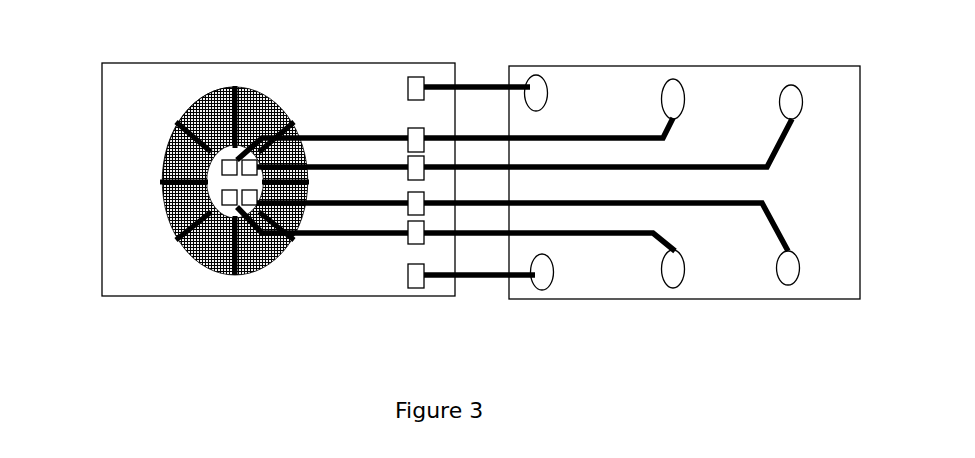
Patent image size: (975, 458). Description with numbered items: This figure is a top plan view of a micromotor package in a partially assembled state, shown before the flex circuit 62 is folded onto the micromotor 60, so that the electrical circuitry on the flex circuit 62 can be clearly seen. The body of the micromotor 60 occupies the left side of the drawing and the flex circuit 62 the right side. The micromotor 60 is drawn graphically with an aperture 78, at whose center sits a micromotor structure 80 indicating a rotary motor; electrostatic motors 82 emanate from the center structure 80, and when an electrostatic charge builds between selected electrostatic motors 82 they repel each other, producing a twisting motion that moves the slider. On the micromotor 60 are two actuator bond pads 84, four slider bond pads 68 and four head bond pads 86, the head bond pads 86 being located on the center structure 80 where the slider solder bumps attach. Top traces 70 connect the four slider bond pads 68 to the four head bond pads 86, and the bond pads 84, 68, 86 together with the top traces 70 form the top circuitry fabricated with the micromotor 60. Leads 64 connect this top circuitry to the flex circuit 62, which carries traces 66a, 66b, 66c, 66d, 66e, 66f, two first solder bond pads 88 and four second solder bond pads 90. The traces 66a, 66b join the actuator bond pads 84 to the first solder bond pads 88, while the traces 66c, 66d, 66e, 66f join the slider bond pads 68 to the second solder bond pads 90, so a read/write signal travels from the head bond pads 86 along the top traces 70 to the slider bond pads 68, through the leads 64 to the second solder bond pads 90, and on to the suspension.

The micromotor 60 is at (102, 293).
The flex circuit 62 is at (860, 299).
The leads 64 is at (485, 72).
The trace 66a is at (520, 84).
The trace 66b is at (518, 283).
The trace 66c is at (603, 135).
The trace 66d is at (726, 164).
The trace 66e is at (752, 206).
The trace 66f is at (655, 237).
The slider bond pads 68 is at (409, 164).
The top traces 70 is at (320, 136).
The aperture 78 is at (203, 94).
The micromotor structure 80 is at (227, 158).
The electrostatic motors 82 is at (172, 163).
The actuator bond pads 84 is at (417, 74).
The head bond pads 86 is at (248, 158).
The first solder bond pads 88 is at (548, 90).
The second solder bond pads 90 is at (792, 86).